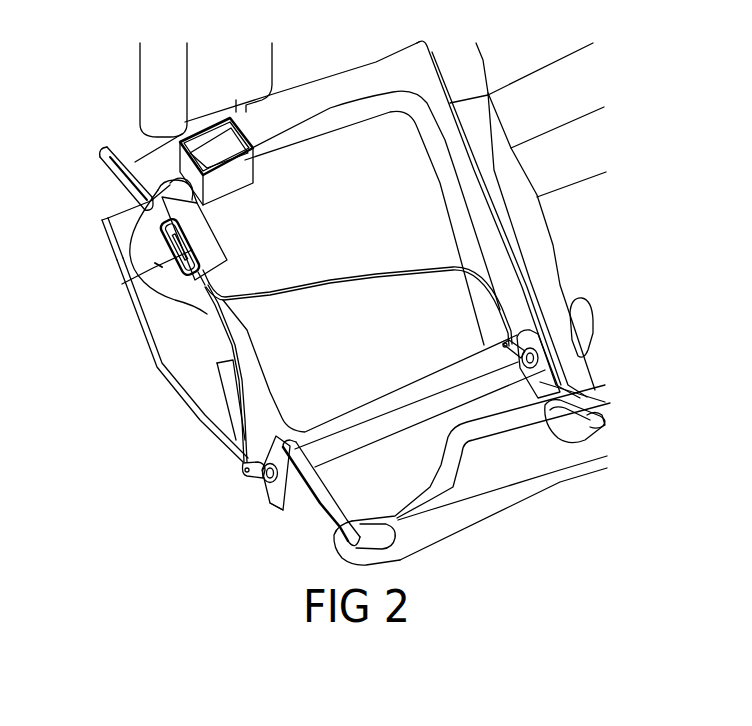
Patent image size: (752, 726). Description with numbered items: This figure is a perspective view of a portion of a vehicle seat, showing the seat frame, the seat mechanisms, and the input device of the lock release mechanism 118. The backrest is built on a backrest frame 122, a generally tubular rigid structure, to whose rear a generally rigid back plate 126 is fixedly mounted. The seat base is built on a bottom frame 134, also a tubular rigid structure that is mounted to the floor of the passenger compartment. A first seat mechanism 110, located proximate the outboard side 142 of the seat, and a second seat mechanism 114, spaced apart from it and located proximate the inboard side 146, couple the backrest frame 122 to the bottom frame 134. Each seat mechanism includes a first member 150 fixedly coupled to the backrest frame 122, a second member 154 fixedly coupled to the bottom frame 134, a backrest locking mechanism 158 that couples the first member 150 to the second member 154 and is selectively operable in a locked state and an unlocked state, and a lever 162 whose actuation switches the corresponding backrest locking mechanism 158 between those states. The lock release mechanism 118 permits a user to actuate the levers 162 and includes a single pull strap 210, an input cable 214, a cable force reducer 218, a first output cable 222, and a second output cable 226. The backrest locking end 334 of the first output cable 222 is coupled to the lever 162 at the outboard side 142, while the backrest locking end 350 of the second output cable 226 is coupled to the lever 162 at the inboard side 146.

The first seat mechanism 110 is at (266, 507).
The second seat mechanism 114 is at (583, 353).
The lock release mechanism 118 is at (128, 283).
The backrest frame 122 is at (312, 133).
The back plate 126 is at (431, 62).
The bottom frame 134 is at (509, 500).
The outboard side 142 is at (157, 365).
The inboard side 146 is at (483, 190).
The first member 150 is at (528, 280).
The second member 154 is at (586, 380).
The backrest locking mechanism 158 is at (523, 372).
The lever 162 is at (520, 356).
The pull strap 210 is at (107, 152).
The input cable 214 is at (103, 224).
The cable force reducer 218 is at (195, 243).
The first output cable 222 is at (212, 310).
The second output cable 226 is at (328, 285).
The backrest locking end 334 is at (245, 466).
The backrest locking end 350 is at (503, 343).